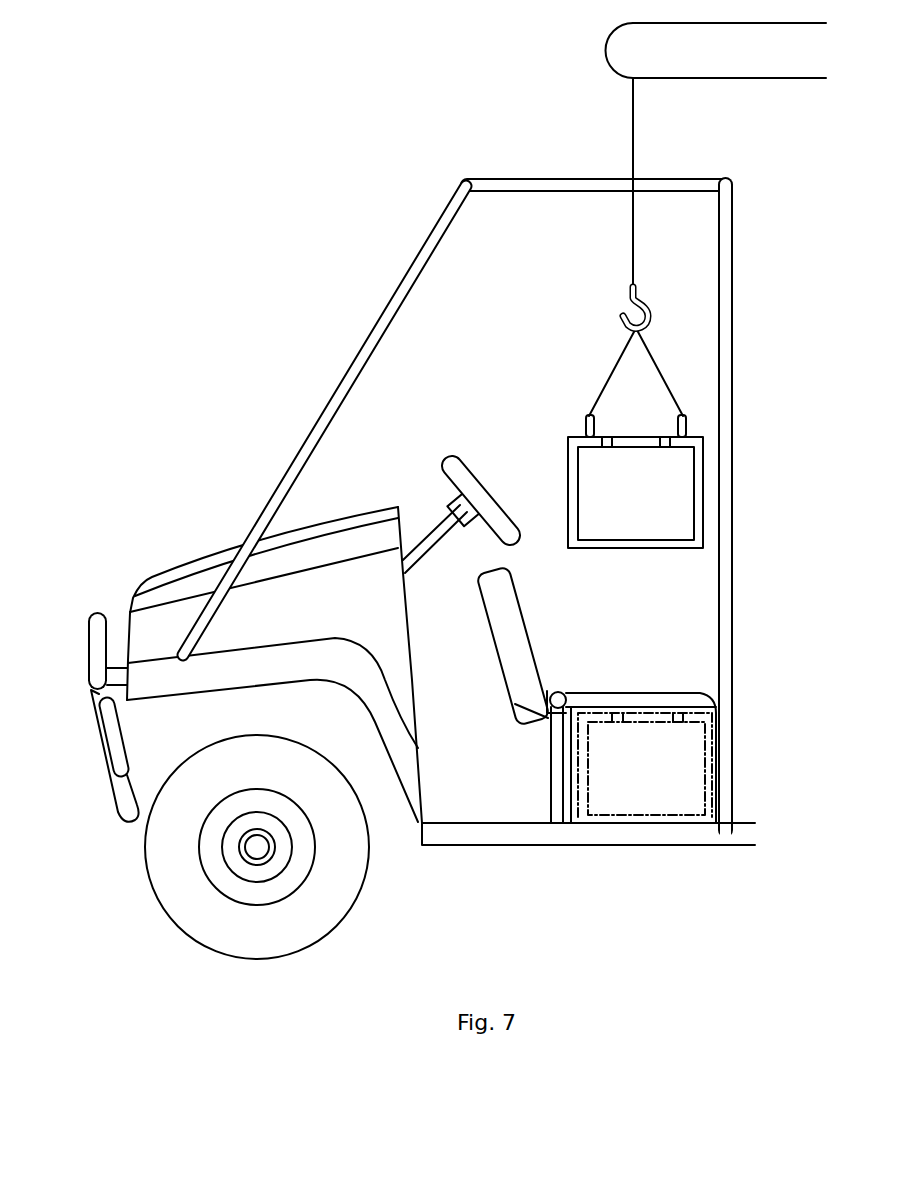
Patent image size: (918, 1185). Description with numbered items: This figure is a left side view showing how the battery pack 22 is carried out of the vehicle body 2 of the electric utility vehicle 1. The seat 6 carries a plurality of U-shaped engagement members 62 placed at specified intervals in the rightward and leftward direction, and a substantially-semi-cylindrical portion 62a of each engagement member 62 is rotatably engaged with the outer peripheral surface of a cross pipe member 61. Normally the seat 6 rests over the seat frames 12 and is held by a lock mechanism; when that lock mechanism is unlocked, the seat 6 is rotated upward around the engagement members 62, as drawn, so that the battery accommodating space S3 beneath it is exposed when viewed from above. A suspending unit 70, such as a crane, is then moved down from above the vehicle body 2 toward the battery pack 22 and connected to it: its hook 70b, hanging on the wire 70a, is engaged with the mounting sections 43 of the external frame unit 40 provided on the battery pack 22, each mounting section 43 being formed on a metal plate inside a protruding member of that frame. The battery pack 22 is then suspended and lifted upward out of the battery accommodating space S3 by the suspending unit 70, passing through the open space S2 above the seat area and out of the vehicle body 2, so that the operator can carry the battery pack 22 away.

The electric utility vehicle 1 is at (440, 170).
The vehicle body 2 is at (738, 257).
The seat 6 is at (497, 588).
The seat frames 12 is at (541, 737).
The battery pack 22 is at (634, 780).
The external frame unit 40 is at (634, 434).
The mounting section 43 is at (588, 426).
The cross pipe member 61 is at (515, 704).
The engagement members 62 is at (566, 694).
The substantially-semi-cylindrical portion 62a is at (557, 690).
The suspending unit 70 is at (626, 257).
The wire 70a is at (633, 143).
The hook 70b is at (652, 312).
The space above seat S2 is at (493, 390).
The battery accommodating space S3 is at (672, 753).